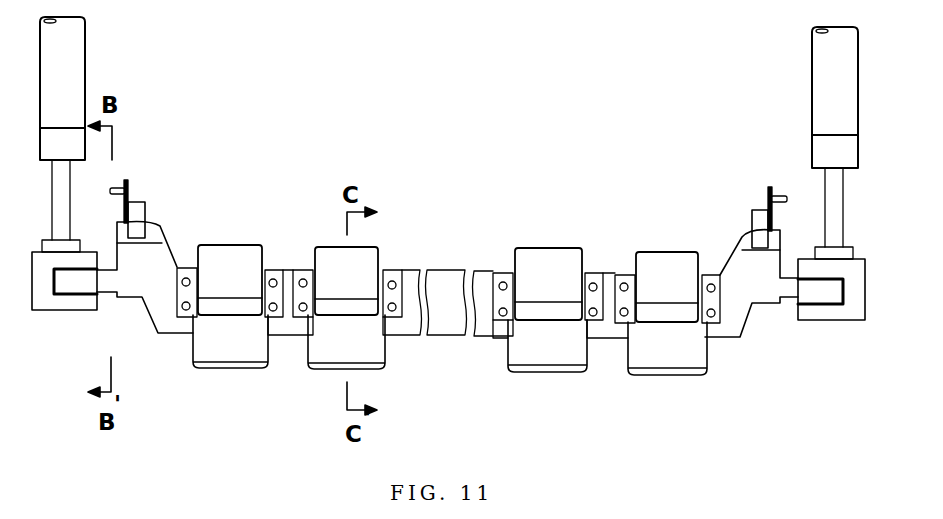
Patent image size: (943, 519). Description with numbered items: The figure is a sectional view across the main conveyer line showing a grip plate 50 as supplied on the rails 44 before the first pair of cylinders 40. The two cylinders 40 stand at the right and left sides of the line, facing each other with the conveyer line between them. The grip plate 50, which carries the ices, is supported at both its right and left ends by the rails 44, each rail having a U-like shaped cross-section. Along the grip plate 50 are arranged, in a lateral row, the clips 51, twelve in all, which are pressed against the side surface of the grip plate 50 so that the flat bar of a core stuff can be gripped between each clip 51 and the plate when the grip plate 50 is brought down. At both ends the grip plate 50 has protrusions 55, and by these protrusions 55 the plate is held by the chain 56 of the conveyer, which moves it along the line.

The cylinder 40 is at (78, 68).
The rail 44 is at (77, 305).
The grip plate 50 is at (548, 248).
The clip 51 is at (367, 253).
The protrusion 55 is at (156, 228).
The chain 56 is at (140, 203).